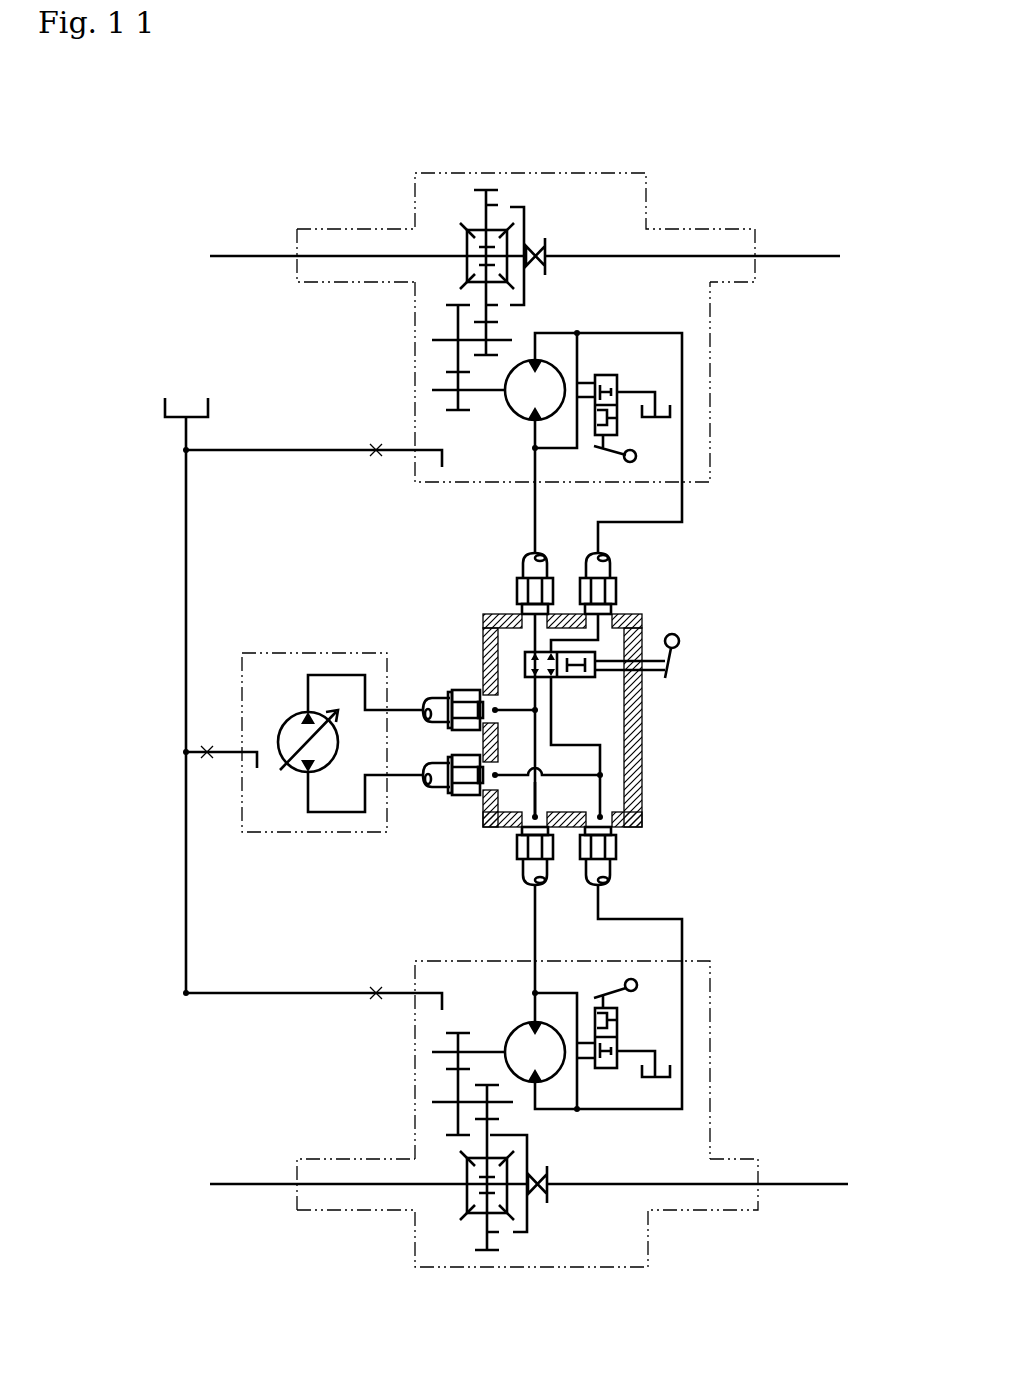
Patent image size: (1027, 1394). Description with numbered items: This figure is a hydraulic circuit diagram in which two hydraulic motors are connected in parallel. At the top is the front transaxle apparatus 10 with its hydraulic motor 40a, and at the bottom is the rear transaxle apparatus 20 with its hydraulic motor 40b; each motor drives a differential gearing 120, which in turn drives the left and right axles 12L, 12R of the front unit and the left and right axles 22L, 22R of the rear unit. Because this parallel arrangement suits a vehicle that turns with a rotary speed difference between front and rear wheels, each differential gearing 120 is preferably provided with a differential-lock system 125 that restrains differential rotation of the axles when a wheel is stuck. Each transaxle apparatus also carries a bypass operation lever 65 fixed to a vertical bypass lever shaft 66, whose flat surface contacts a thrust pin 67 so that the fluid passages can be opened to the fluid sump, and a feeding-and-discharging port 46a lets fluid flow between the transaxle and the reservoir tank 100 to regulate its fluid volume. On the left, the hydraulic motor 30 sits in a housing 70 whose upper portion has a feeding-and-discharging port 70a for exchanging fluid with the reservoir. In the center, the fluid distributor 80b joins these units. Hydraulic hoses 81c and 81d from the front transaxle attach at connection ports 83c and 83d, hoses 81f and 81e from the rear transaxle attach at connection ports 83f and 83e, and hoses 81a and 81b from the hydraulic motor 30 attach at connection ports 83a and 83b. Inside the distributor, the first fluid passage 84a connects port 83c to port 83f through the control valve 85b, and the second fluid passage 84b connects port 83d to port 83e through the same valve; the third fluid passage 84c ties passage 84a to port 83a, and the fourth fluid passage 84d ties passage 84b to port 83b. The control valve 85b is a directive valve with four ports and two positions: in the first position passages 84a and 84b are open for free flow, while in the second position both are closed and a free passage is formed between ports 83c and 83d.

The front transaxle apparatus 10 is at (710, 483).
The rear transaxle apparatus 20 is at (712, 1050).
The left front axle 12L is at (237, 258).
The right front axle 12R is at (776, 258).
The left rear axle 22L is at (239, 1186).
The right rear axle 22R is at (777, 1186).
The hydraulic motor 30 is at (330, 770).
The hydraulic motor 40a is at (510, 432).
The hydraulic motor 40b is at (513, 1013).
The feeding-and-discharging port 46a is at (376, 458).
The bypass operation lever 65 is at (628, 463).
The bypass lever shaft 66 is at (612, 446).
The thrust pin 67 is at (614, 366).
The housing 70 is at (302, 833).
The feeding-and-discharging port 70a is at (207, 760).
The fluid distributor 80b is at (656, 781).
The hydraulic hose 81a is at (430, 697).
The hydraulic hose 81b is at (434, 788).
The hydraulic hose 81c is at (522, 566).
The hydraulic hose 81d is at (610, 566).
The hydraulic hose 81e is at (611, 876).
The hydraulic hose 81f is at (522, 876).
The connection port 83a is at (466, 692).
The connection port 83b is at (470, 797).
The connection port 83c is at (522, 592).
The connection port 83d is at (606, 592).
The connection port 83e is at (612, 848).
The connection port 83f is at (520, 848).
The first fluid passage 84a is at (538, 791).
The second fluid passage 84b is at (554, 746).
The third fluid passage 84c is at (538, 711).
The fourth fluid passage 84d is at (540, 778).
The control valve 85b is at (585, 684).
The reservoir tank 100 is at (208, 410).
The differential gearings 120 is at (430, 197).
The differential-lock systems 125 is at (547, 231).